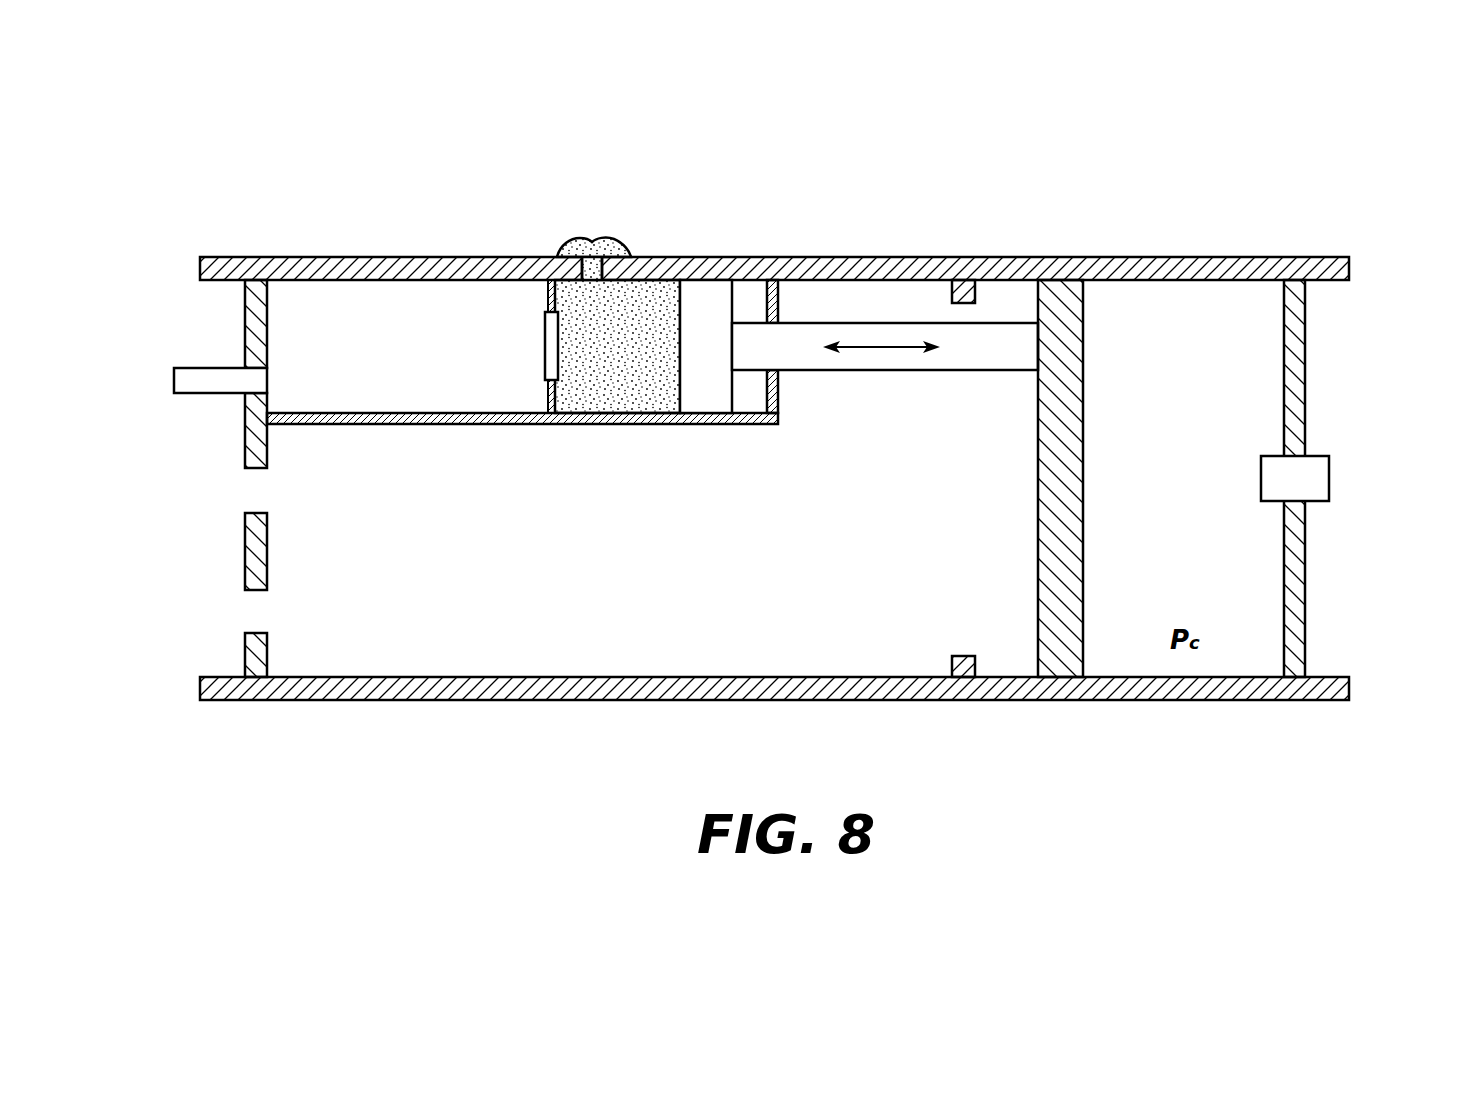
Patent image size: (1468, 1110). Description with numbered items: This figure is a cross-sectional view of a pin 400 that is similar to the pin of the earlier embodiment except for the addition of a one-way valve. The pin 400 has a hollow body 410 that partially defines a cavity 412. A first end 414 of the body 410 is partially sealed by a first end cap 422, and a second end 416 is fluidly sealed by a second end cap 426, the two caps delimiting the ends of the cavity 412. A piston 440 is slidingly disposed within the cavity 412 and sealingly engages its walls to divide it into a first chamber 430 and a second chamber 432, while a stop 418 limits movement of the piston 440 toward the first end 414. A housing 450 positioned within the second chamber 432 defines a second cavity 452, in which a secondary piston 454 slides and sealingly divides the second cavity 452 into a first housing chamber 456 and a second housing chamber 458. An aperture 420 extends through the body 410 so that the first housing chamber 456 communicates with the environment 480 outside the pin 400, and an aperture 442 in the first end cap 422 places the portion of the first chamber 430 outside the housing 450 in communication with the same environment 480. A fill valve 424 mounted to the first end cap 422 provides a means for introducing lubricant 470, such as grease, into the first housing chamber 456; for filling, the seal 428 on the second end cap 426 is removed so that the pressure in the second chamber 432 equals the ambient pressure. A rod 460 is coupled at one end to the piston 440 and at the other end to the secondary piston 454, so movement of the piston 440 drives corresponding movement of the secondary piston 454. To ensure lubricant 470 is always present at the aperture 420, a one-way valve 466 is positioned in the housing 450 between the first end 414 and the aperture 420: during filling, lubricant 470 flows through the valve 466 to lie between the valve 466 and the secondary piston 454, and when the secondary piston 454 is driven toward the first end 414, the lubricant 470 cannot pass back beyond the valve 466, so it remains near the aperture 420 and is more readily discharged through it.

The pin 400 is at (1243, 187).
The hollow body 410 is at (852, 257).
The cavity 412 is at (1160, 780).
The first end 414 is at (220, 642).
The second end 416 is at (1333, 639).
The stop 418 is at (972, 661).
The aperture 420 is at (591, 272).
The first end cap 422 is at (245, 540).
The fill valve 424 is at (183, 382).
The second end cap 426 is at (1305, 568).
The seal 428 is at (1328, 473).
The first chamber 430 is at (925, 648).
The second chamber 432 is at (1170, 655).
The piston 440 is at (1085, 325).
The aperture 442 is at (256, 468).
The housing 450 is at (368, 424).
The second cavity 452 is at (732, 130).
The secondary piston 454 is at (711, 297).
The first housing chamber 456 is at (566, 288).
The second housing chamber 458 is at (752, 290).
The rod 460 is at (1012, 328).
The one-way valve 466 is at (546, 347).
The lubricant 470 is at (662, 303).
The environment 480 is at (150, 113).